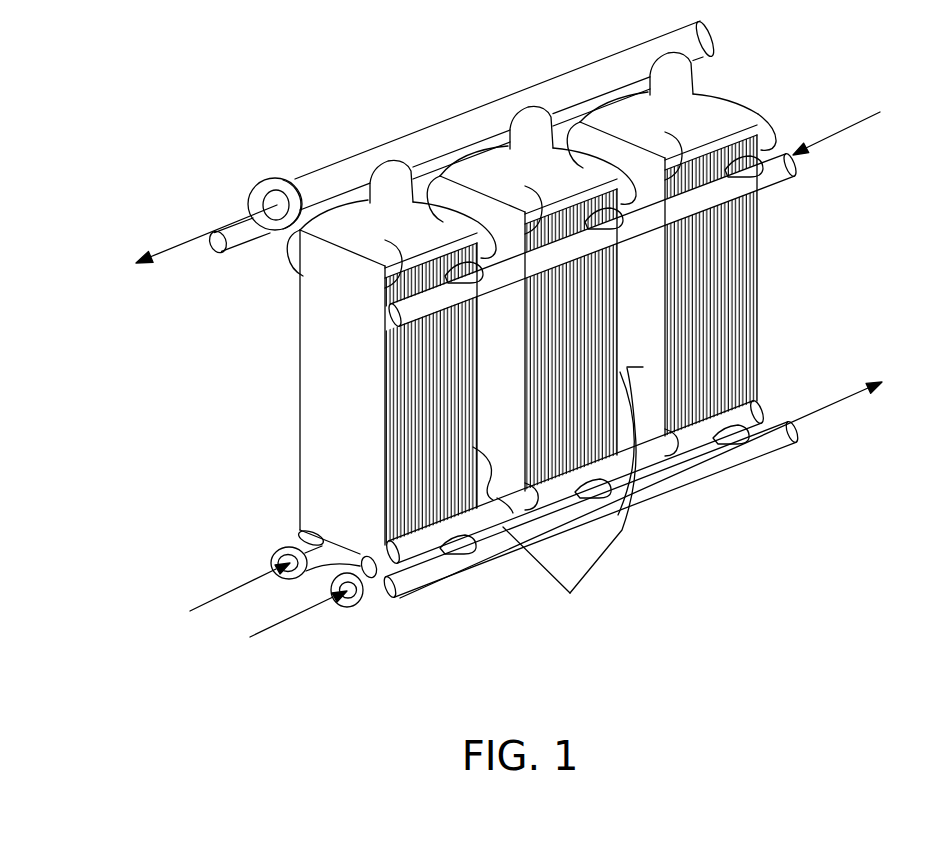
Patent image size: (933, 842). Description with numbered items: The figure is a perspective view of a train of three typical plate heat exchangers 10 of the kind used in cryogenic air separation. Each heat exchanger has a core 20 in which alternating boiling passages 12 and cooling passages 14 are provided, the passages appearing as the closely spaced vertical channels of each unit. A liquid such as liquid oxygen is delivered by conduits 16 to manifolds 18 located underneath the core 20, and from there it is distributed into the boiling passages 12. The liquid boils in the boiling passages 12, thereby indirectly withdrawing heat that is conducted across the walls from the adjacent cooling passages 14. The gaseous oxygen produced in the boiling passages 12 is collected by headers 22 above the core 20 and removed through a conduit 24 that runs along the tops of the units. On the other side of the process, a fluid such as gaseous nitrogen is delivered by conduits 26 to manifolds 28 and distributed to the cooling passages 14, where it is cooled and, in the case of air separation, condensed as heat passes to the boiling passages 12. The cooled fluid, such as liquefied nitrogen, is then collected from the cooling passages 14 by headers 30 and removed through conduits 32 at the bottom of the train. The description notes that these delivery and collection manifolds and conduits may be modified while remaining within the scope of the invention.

The plate heat exchangers 10 is at (763, 312).
The boiling passages 12 is at (398, 508).
The cooling passages 14 is at (483, 507).
The conduits 16 is at (343, 572).
The manifolds 18 is at (292, 533).
The core 20 is at (573, 497).
The headers 22 is at (702, 116).
The conduit 24 is at (310, 182).
The conduits 26 is at (783, 172).
The manifolds 28 is at (757, 143).
The headers 30 is at (740, 423).
The conduits 32 is at (668, 478).